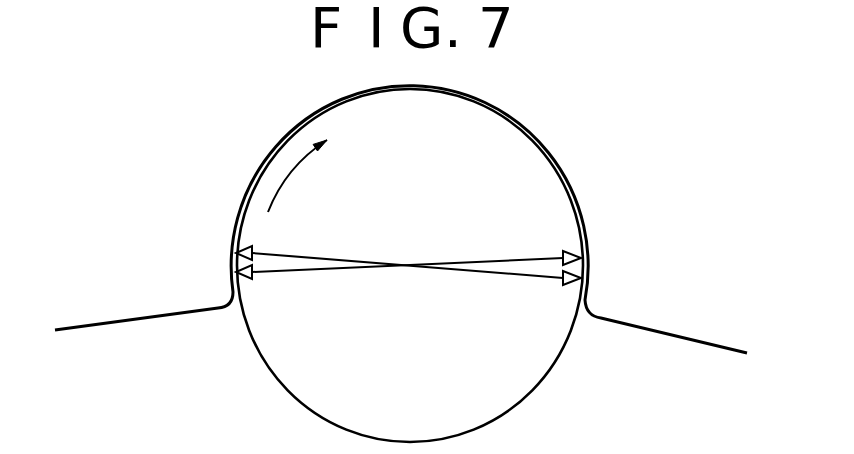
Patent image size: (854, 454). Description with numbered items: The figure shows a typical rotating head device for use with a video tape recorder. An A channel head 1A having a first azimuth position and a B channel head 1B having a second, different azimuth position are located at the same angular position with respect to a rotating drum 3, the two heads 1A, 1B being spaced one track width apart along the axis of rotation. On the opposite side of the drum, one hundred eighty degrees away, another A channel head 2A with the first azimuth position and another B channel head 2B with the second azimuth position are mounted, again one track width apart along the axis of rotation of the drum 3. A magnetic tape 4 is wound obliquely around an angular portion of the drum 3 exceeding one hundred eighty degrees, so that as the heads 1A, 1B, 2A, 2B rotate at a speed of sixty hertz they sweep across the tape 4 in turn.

The A channel head 1A is at (237, 244).
The B channel head 1B is at (242, 292).
The A channel head 2A is at (576, 306).
The B channel head 2B is at (584, 244).
The rotating drum 3 is at (513, 378).
The magnetic tape 4 is at (637, 323).